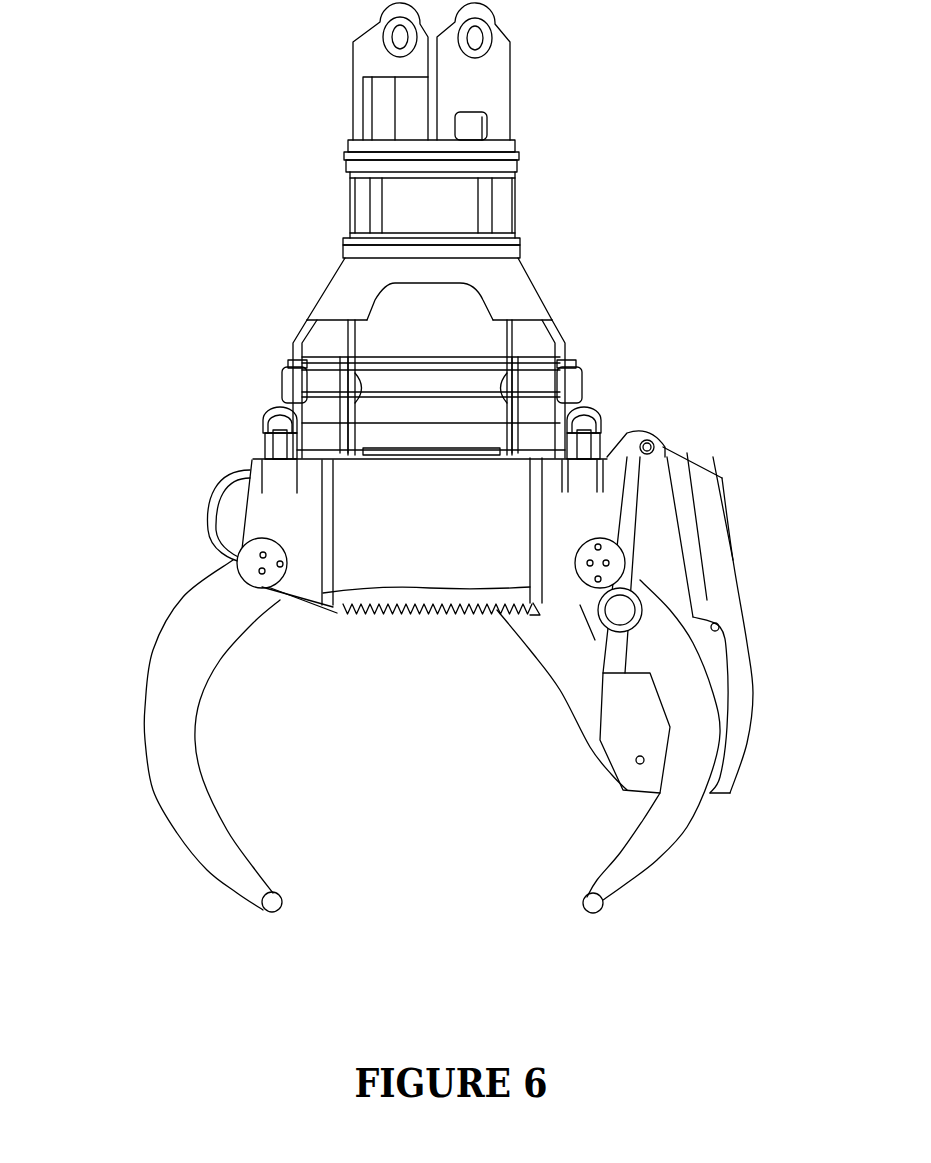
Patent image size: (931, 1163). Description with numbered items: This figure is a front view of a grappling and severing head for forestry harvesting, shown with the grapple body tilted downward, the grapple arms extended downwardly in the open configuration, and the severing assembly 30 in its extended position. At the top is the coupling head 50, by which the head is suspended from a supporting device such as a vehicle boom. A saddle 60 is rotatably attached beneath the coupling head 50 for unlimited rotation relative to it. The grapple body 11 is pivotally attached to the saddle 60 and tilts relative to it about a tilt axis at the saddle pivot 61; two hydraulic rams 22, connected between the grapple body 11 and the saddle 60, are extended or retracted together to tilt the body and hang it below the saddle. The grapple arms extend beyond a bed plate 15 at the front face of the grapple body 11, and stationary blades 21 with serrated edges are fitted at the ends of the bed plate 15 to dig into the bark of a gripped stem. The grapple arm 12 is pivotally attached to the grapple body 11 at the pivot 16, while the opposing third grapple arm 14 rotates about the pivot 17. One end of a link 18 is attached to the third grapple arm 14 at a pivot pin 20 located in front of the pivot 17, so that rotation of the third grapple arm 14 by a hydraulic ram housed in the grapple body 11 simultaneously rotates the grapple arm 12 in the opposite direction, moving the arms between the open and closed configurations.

The grapple body 11 is at (507, 540).
The grapple arm 12 is at (158, 747).
The third grapple arm 14 is at (633, 873).
The bed plate 15 is at (388, 633).
The pivot 16 is at (262, 563).
The pivot 17 is at (610, 570).
The link 18 is at (580, 605).
The pivot pin 20 is at (613, 620).
The stationary blades 21 is at (340, 612).
The hydraulic rams 22 is at (267, 422).
The severing assembly 30 is at (735, 632).
The coupling head 50 is at (477, 87).
The saddle 60 is at (458, 228).
The saddle pivot 61 is at (282, 388).